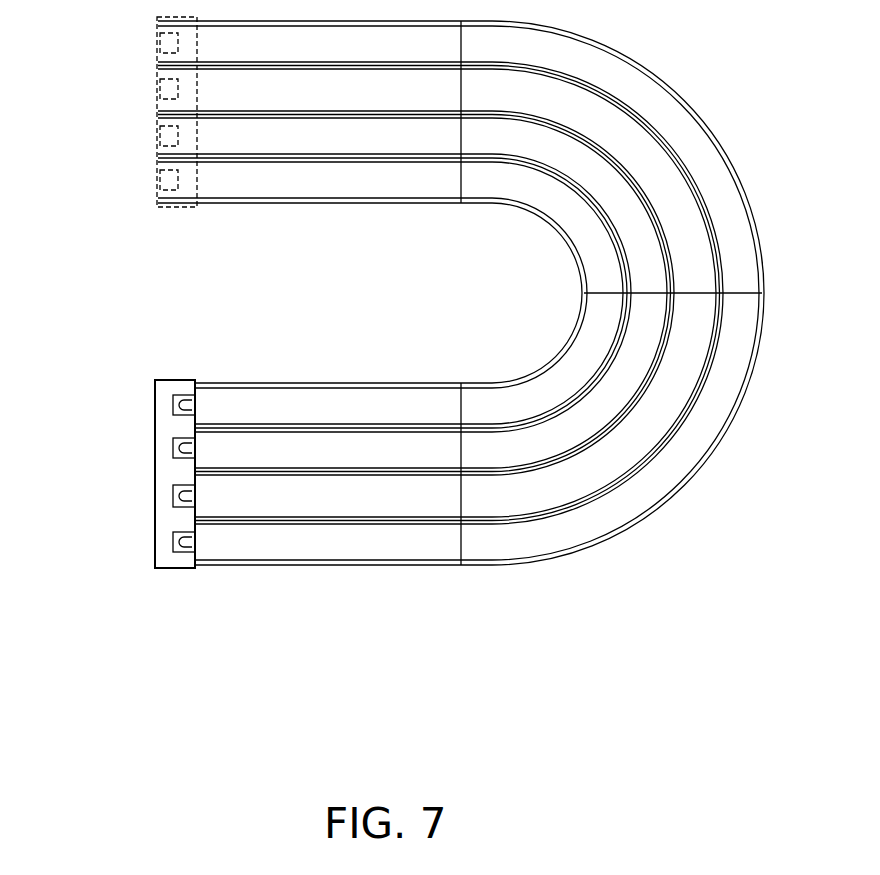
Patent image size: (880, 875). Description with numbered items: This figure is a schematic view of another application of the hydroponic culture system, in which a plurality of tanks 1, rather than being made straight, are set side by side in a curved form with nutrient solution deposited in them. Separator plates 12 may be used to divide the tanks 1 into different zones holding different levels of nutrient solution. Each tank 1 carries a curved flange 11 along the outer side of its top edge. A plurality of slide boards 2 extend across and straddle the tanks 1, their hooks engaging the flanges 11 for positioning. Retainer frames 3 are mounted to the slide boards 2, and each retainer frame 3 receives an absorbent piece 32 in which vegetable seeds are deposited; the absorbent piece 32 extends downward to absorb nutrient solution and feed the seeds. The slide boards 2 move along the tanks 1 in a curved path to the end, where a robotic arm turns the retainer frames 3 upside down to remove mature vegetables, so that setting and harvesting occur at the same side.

The tank 1 is at (468, 337).
The curved flange 11 is at (408, 384).
The separator plate 12 is at (733, 292).
The slide board 2 is at (143, 428).
The retainer frame 3 is at (156, 420).
The absorbent piece 32 is at (187, 403).